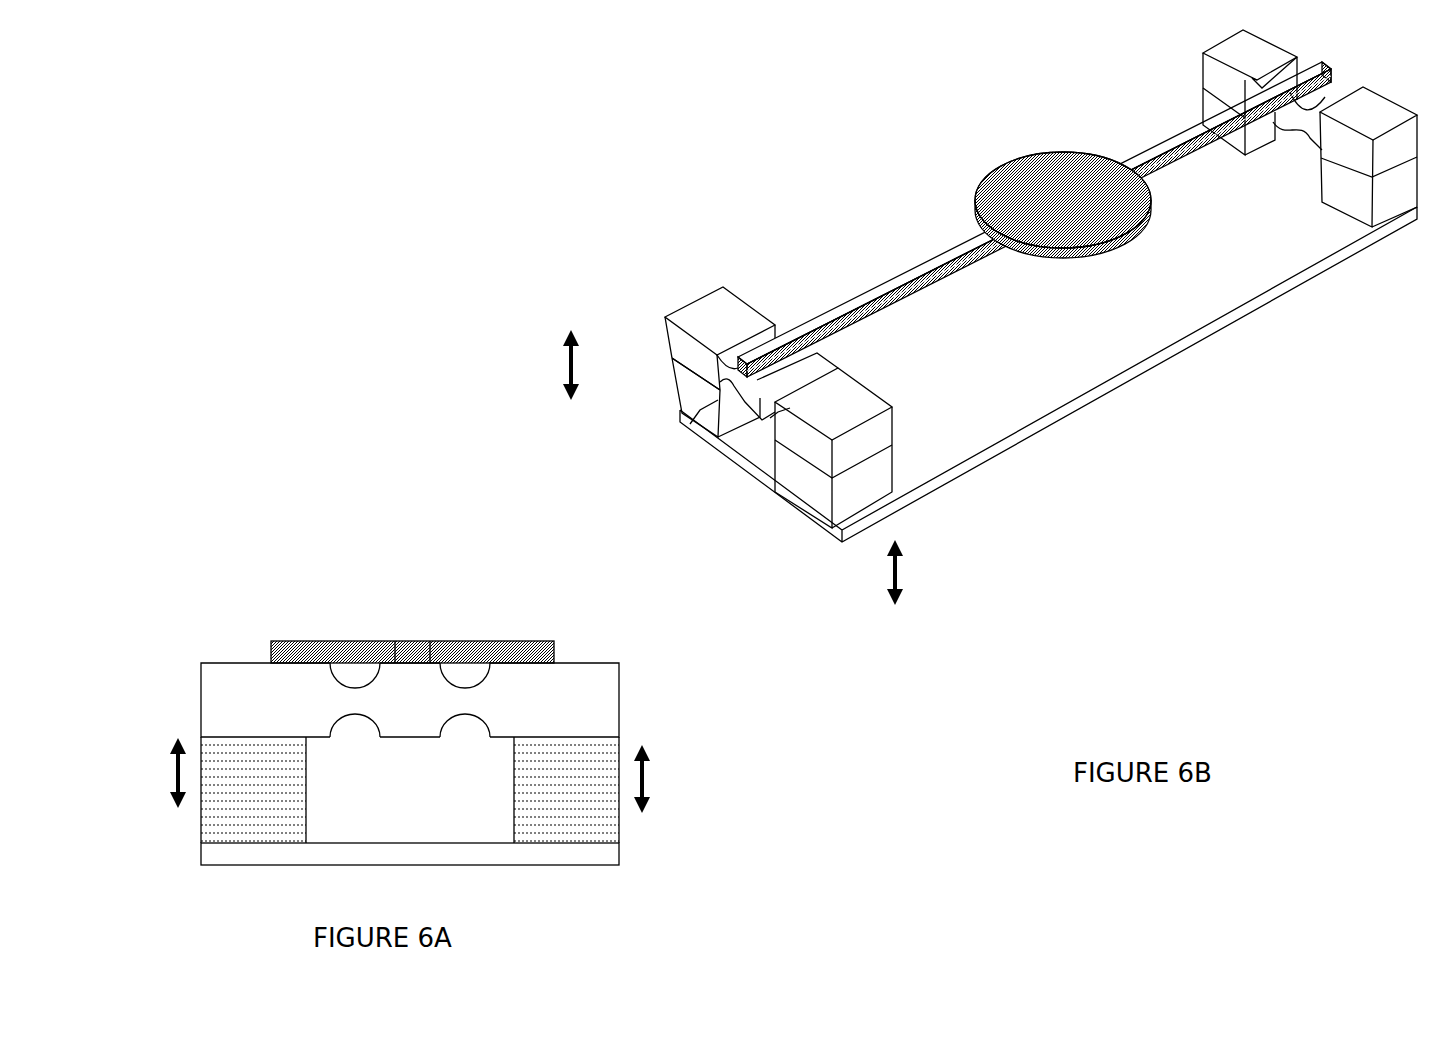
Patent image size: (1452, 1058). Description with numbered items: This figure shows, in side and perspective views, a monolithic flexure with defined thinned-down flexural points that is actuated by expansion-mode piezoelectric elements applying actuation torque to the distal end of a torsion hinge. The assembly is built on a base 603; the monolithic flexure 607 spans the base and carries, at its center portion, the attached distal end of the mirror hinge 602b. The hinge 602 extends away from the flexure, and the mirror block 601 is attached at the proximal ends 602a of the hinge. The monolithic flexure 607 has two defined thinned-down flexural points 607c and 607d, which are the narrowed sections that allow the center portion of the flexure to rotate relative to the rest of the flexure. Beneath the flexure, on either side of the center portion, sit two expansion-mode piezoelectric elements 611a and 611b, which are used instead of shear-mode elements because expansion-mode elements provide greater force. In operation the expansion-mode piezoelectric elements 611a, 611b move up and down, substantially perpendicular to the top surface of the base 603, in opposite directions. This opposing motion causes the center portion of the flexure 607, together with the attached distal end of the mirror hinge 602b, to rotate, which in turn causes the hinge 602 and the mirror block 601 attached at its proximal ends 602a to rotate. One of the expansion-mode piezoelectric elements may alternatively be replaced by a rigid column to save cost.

In FIG. 6A, the mirror block 601 is at (297, 620).
In FIG. 6B, the mirror block 601 is at (1004, 143).
In FIG. 6B, the hinge 602 is at (868, 270).
In FIG. 6B, the proximal ends of the hinge 602a is at (970, 222).
In FIG. 6A, the distal end of the mirror hinge 602b is at (415, 640).
In FIG. 6B, the distal end of the mirror hinge 602b is at (795, 330).
In FIG. 6A, the base 603 is at (557, 873).
In FIG. 6B, the base 603 is at (1160, 368).
In FIG. 6A, the monolithic flexure 607 is at (632, 700).
In FIG. 6B, the monolithic flexure 607 is at (910, 410).
In FIG. 6A, the thinned-down flexural point 607c is at (347, 700).
In FIG. 6B, the thinned-down flexural point 607c is at (692, 423).
In FIG. 6A, the thinned-down flexural point 607d is at (475, 700).
In FIG. 6B, the thinned-down flexural point 607d is at (773, 425).
In FIG. 6A, the expansion-mode piezoelectric element 611a is at (630, 828).
In FIG. 6B, the expansion-mode piezoelectric element 611a is at (901, 497).
In FIG. 6A, the expansion-mode piezoelectric element 611b is at (199, 828).
In FIG. 6B, the expansion-mode piezoelectric element 611b is at (650, 368).